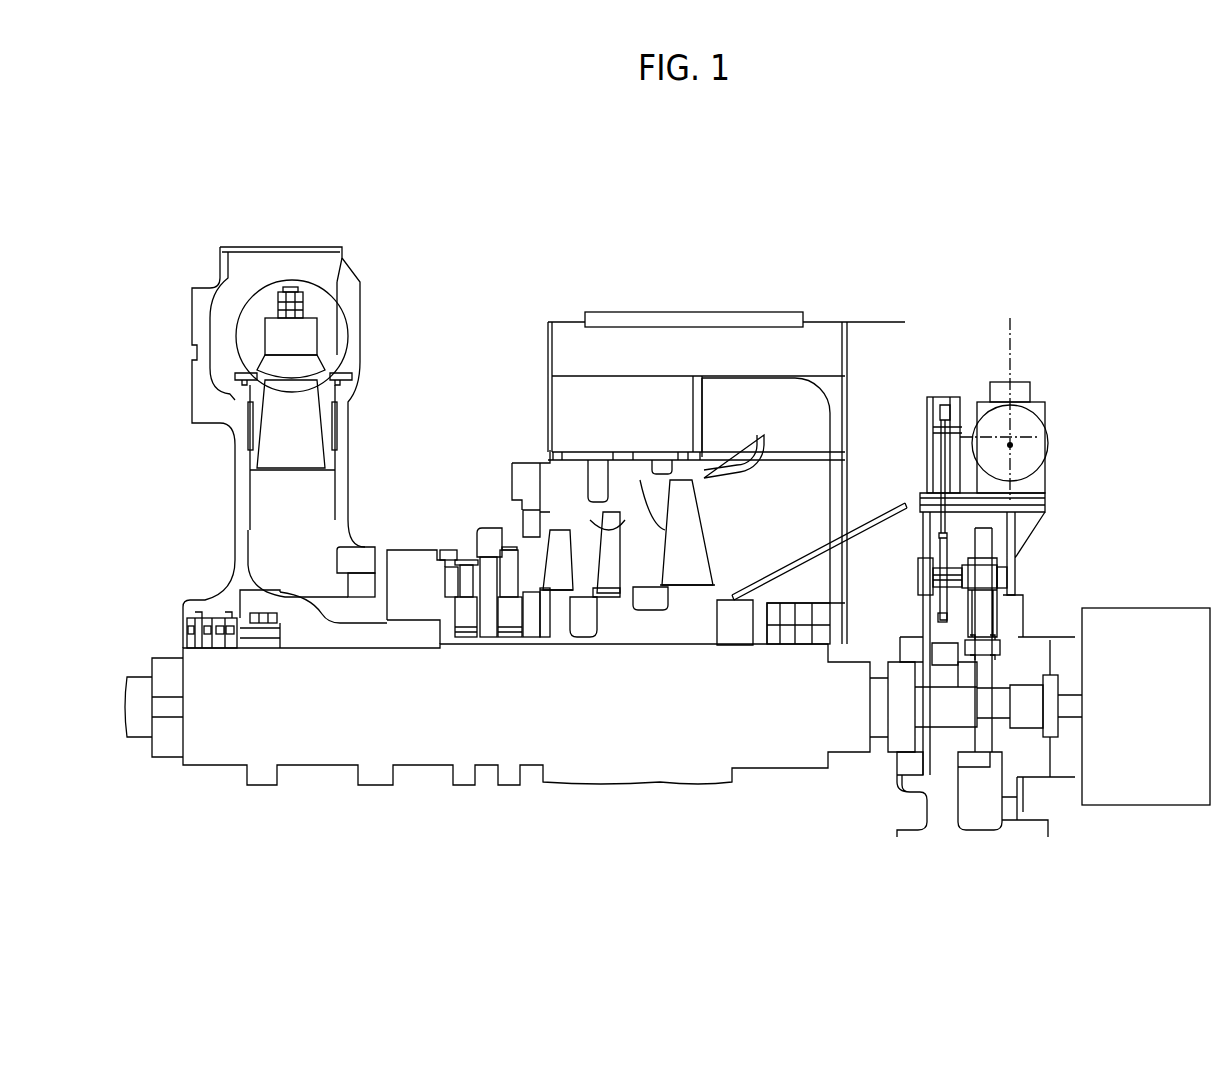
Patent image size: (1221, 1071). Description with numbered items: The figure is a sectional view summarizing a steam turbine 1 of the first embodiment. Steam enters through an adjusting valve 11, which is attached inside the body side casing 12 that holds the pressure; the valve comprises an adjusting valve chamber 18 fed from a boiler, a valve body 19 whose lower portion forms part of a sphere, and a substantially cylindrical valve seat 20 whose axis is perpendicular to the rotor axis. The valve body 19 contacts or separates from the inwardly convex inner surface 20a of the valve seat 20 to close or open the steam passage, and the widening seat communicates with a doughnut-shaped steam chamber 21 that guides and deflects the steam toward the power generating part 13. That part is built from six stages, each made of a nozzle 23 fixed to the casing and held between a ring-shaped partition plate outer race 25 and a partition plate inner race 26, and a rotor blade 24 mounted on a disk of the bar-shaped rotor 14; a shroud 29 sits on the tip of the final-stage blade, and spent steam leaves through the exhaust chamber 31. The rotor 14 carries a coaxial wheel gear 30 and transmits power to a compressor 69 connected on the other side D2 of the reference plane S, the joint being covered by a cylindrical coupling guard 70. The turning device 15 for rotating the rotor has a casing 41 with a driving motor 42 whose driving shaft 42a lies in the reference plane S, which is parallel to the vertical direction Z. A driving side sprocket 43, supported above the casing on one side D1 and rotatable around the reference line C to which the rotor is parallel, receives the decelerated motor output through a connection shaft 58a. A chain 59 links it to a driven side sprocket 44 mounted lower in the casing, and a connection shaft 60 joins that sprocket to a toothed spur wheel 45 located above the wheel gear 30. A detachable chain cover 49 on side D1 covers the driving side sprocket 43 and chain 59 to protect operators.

The steam turbine 1 is at (160, 278).
The adjusting valve 11 is at (330, 340).
The body side casing 12 is at (478, 530).
The power generating part 13 is at (367, 608).
The rotor 14 is at (570, 740).
The turning device 15 is at (1068, 388).
The adjusting valve chamber 18 is at (315, 300).
The valve body 19 is at (312, 366).
The valve seat 20 is at (325, 422).
The inner surface 20a is at (240, 373).
The steam chamber 21 is at (322, 480).
The nozzle 23 is at (350, 585).
The rotor blade 24 is at (457, 550).
The partition plate outer race 25 is at (490, 540).
The partition plate inner race 26 is at (445, 615).
The shroud 29 is at (705, 490).
The wheel gear 30 is at (985, 722).
The exhaust chamber 31 is at (800, 425).
The casing 41 is at (923, 535).
The driving motor 42 is at (1030, 425).
The driving shaft 42a is at (1012, 447).
The driving side sprocket 43 is at (943, 406).
The driven side sprocket 44 is at (938, 616).
The toothed spur wheel 45 is at (990, 540).
The chain cover 49 is at (925, 415).
The connection shaft 58a is at (933, 430).
The chain 59 is at (940, 478).
The connection shaft 60 is at (972, 577).
The compressor 69 is at (1150, 610).
The coupling guard 70 is at (1040, 655).
The reference line C is at (1035, 440).
The reference plane S is at (1012, 322).
The one side D1 is at (1030, 363).
The other side D2 is at (1026, 347).
The vertical direction Z is at (1168, 418).